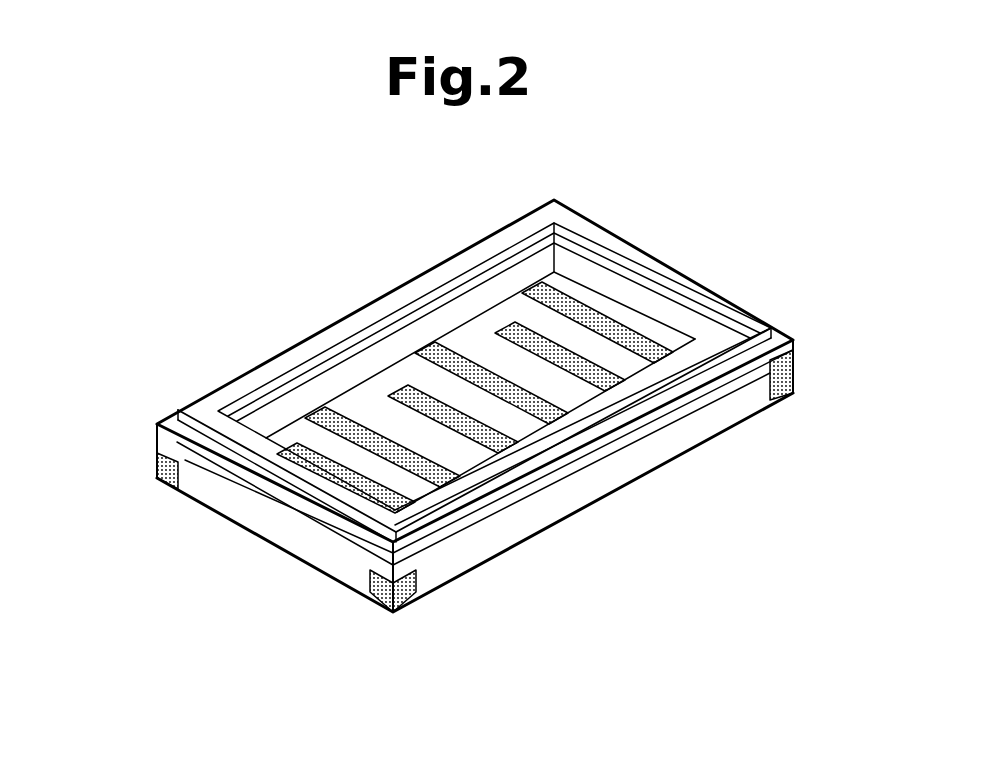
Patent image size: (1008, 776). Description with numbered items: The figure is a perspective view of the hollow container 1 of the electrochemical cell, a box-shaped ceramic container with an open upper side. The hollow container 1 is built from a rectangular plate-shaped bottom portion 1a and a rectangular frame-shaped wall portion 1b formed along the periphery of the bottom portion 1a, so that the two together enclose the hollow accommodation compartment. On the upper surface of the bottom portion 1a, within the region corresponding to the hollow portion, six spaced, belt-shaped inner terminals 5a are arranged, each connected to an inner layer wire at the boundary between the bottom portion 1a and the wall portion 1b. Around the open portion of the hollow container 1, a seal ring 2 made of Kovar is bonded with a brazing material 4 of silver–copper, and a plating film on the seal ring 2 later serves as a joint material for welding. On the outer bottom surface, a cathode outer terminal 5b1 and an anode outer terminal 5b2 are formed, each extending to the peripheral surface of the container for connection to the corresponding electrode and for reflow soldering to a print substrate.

The hollow container 1 is at (475, 399).
The bottom portion 1a is at (613, 312).
The wall portion 1b is at (670, 320).
The seal ring 2 is at (588, 235).
The brazing material 4 is at (166, 418).
The inner terminals 5a is at (430, 345).
The cathode outer terminal 5b1 is at (160, 480).
The anode outer terminal 5b2 is at (783, 386).